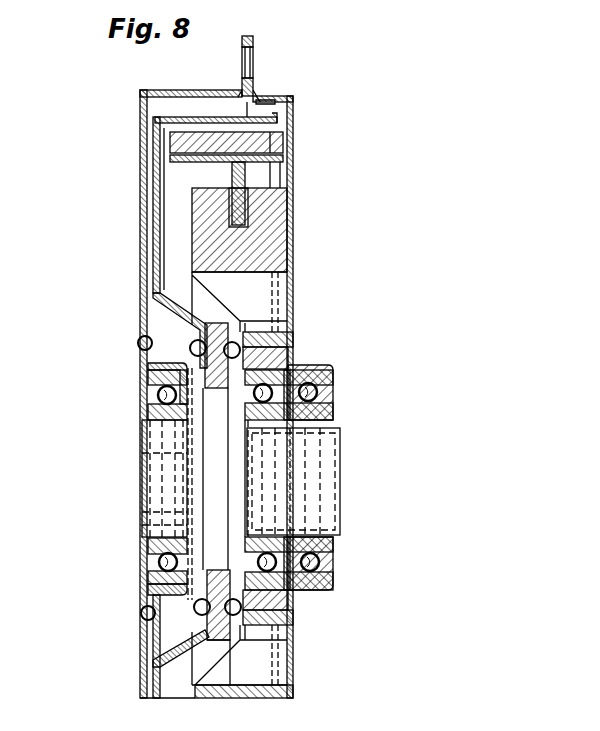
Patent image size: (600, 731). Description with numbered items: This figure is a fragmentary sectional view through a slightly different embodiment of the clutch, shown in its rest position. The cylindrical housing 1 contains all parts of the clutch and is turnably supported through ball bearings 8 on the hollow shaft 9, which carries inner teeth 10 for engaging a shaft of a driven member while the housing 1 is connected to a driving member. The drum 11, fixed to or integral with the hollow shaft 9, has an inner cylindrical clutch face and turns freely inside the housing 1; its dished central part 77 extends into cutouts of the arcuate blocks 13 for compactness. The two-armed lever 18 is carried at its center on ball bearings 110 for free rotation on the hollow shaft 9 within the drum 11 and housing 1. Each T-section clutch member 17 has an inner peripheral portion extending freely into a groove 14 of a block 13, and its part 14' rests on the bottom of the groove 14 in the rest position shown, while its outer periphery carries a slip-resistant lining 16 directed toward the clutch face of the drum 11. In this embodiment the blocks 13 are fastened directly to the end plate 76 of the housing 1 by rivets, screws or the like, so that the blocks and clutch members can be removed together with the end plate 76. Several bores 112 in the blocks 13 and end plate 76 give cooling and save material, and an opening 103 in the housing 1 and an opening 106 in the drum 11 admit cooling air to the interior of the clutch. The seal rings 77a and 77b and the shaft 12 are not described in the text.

The housing 1 is at (254, 44).
The drum 11 is at (178, 117).
The opening 103 is at (272, 100).
The opening 106 is at (160, 193).
The lining 16 is at (172, 137).
The clutch member 17 is at (172, 160).
The part of clutch member 14' is at (284, 194).
The groove 14 is at (262, 230).
The arcuate block 13 is at (265, 258).
The bore 112 is at (268, 297).
The end plate 76 is at (293, 175).
The two-armed lever 18 is at (292, 346).
The ball bearing 110 is at (312, 365).
The ball bearing 8 is at (162, 397).
The bracket 77a is at (178, 385).
The dished central part 77 is at (143, 338).
The seal ring 77b is at (192, 348).
The shaft 12 is at (230, 698).
The inner teeth 10 is at (207, 478).
The hollow shaft 9 is at (170, 512).